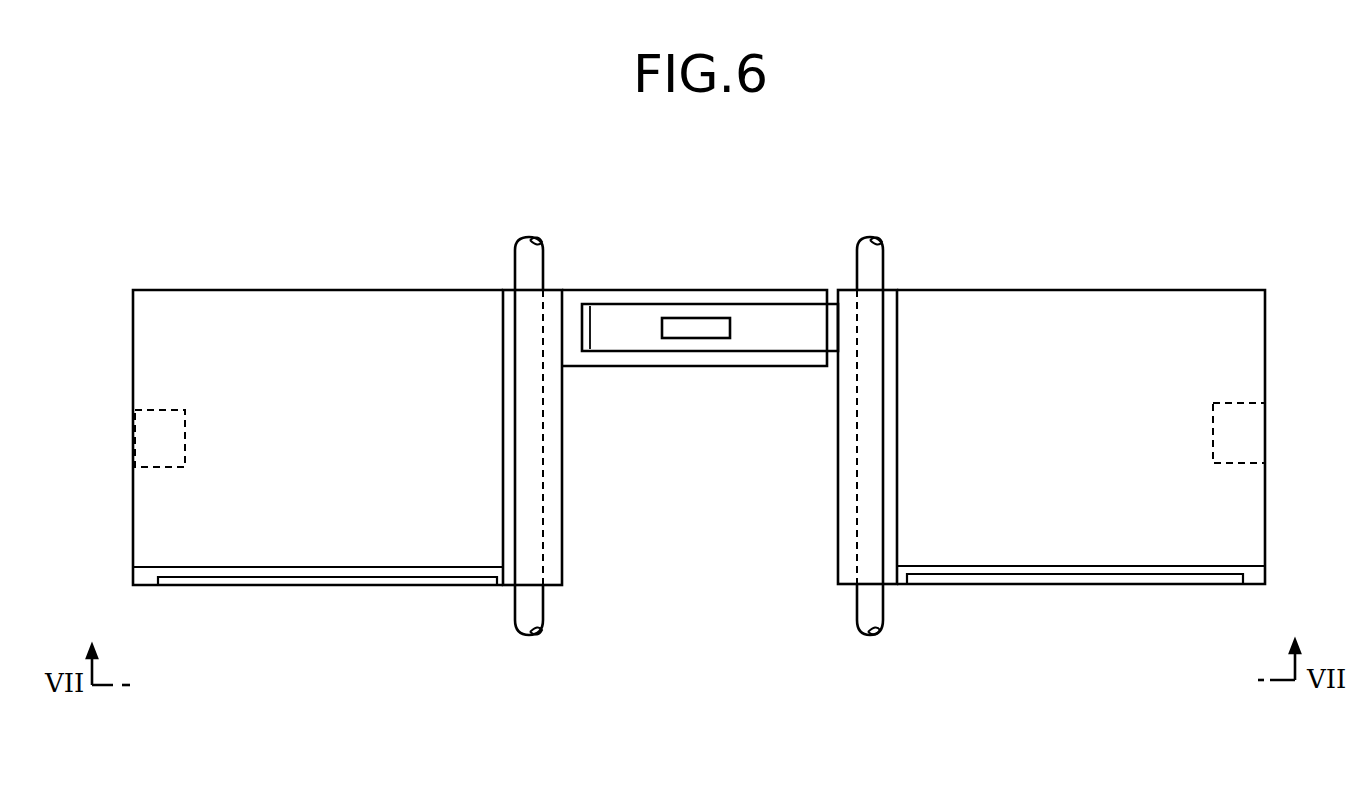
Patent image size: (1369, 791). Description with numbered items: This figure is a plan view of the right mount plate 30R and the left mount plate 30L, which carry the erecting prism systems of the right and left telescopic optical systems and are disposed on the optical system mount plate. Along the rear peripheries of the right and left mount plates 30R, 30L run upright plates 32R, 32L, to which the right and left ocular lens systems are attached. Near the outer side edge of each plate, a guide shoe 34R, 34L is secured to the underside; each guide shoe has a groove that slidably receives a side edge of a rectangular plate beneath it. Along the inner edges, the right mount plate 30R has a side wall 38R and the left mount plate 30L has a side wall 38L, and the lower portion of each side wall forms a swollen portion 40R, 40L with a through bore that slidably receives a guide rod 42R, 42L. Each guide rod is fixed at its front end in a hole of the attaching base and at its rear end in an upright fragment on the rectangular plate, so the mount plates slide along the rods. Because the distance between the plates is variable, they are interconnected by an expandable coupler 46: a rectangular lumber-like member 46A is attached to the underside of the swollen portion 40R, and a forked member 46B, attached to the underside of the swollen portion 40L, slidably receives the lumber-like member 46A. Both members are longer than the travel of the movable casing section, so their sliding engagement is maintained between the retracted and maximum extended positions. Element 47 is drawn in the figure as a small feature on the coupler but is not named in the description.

The left mount plate 30L is at (345, 449).
The right mount plate 30R is at (1062, 447).
The upright plate 32L is at (325, 574).
The upright plate 32R is at (1085, 568).
The guide shoe 34L is at (150, 444).
The guide shoe 34R is at (1250, 438).
The side wall 38L is at (503, 374).
The side wall 38R is at (897, 372).
The swollen portion 40L is at (557, 488).
The swollen portion 40R is at (848, 494).
The guide rod 42L is at (535, 612).
The guide rod 42R is at (870, 616).
The expandable coupler 46 is at (702, 289).
The lumber-like member 46A is at (789, 343).
The forked member 46B is at (620, 358).
The slot 47 is at (690, 338).